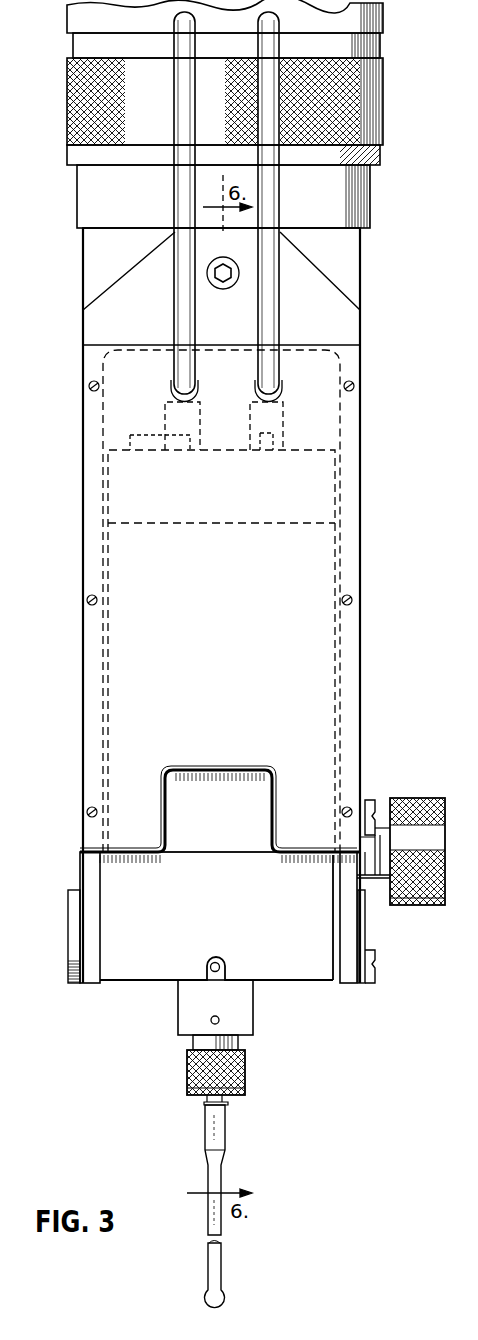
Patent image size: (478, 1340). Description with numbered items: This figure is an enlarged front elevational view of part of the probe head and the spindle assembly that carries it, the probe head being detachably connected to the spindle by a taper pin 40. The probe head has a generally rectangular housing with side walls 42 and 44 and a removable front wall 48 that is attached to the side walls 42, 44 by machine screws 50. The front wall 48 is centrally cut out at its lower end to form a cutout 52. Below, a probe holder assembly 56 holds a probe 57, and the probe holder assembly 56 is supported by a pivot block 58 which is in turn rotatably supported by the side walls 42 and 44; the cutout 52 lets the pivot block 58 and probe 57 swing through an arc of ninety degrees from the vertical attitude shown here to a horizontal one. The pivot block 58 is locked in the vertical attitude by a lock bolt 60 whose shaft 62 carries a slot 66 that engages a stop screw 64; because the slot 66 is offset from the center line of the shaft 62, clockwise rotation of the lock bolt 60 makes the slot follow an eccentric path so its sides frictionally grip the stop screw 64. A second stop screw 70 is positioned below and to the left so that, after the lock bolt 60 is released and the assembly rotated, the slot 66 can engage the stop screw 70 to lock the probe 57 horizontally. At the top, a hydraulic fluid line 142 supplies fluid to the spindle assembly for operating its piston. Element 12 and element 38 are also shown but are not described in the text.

The housing 12 is at (360, 458).
The knurled coupling nut 38 is at (365, 115).
The taper pin 40 is at (218, 289).
The side wall 42 is at (360, 655).
The side wall 44 is at (83, 663).
The removable front wall 48 is at (315, 712).
The machine screws 50 is at (90, 390).
The cutout 52 is at (186, 773).
The probe holder assembly 56 is at (243, 1052).
The probe 57 is at (225, 1130).
The pivot block 58 is at (287, 965).
The lock bolt 60 is at (445, 859).
The shaft 62 is at (375, 880).
The stop screw 64 is at (369, 803).
The slot 66 is at (348, 845).
The second stop screw 70 is at (376, 976).
The hydraulic fluid line 142 is at (272, 297).